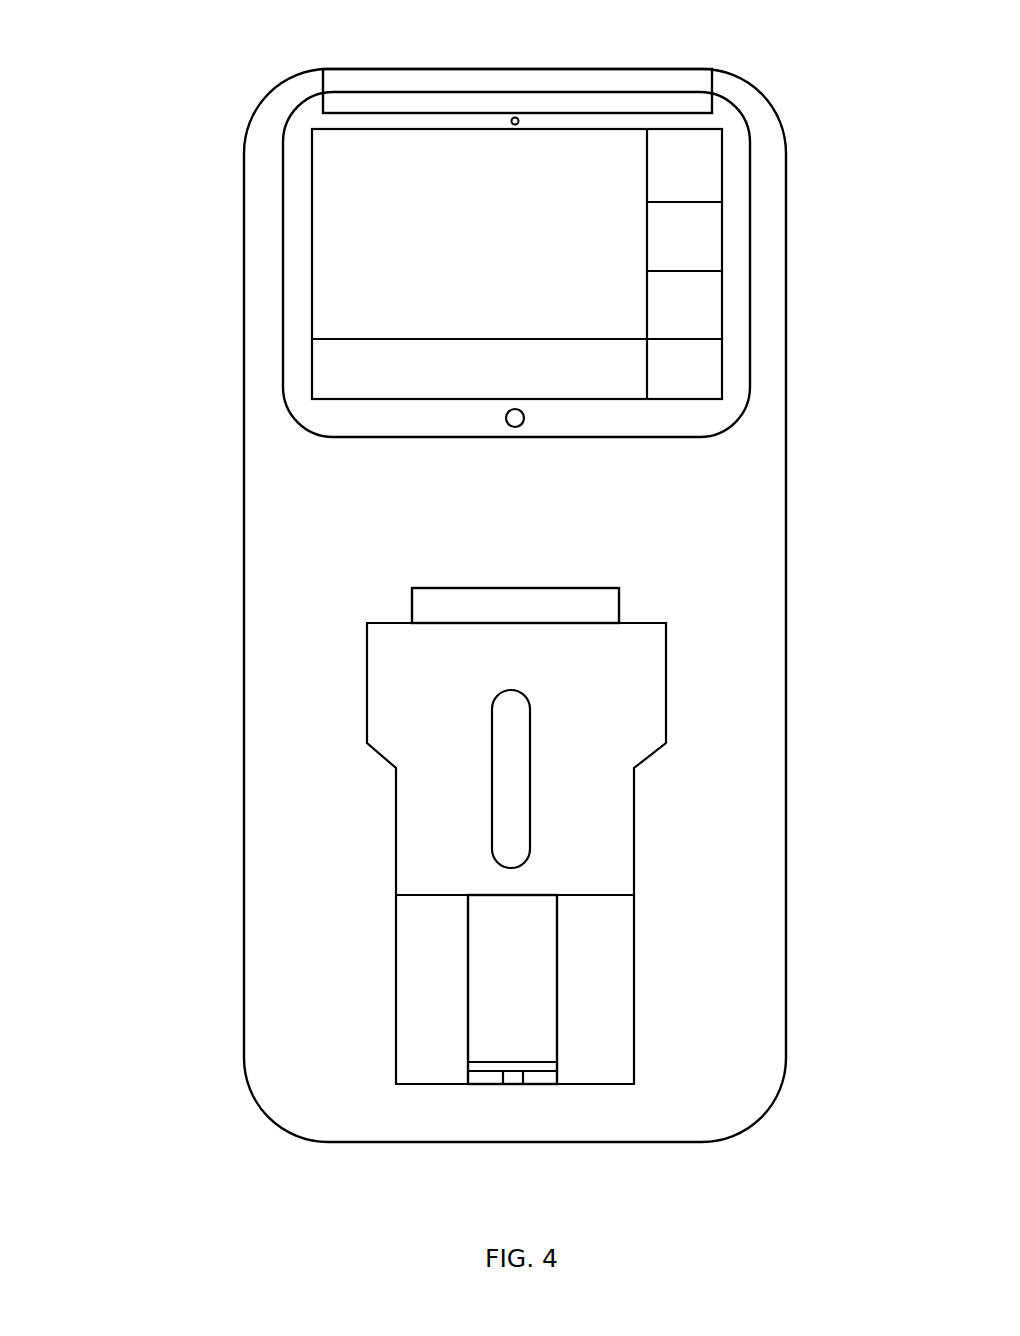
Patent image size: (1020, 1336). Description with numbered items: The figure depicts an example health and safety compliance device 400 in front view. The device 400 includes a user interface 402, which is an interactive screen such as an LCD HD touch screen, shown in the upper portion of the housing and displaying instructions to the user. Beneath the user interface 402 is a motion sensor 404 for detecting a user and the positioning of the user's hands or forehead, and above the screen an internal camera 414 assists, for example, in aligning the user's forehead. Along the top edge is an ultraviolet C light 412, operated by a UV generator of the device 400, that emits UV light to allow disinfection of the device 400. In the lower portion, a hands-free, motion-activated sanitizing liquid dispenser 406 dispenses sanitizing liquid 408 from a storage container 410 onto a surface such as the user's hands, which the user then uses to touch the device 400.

The health and safety compliance device 400 is at (110, 101).
The user interface 402 is at (333, 257).
The motion sensor 404 is at (523, 422).
The sanitizing liquid dispenser 406 is at (634, 1062).
The sanitizing liquid 408 is at (522, 793).
The storage container 410 is at (666, 637).
The ultraviolet C (UVC) light 412 is at (685, 93).
The internal camera 414 is at (519, 120).